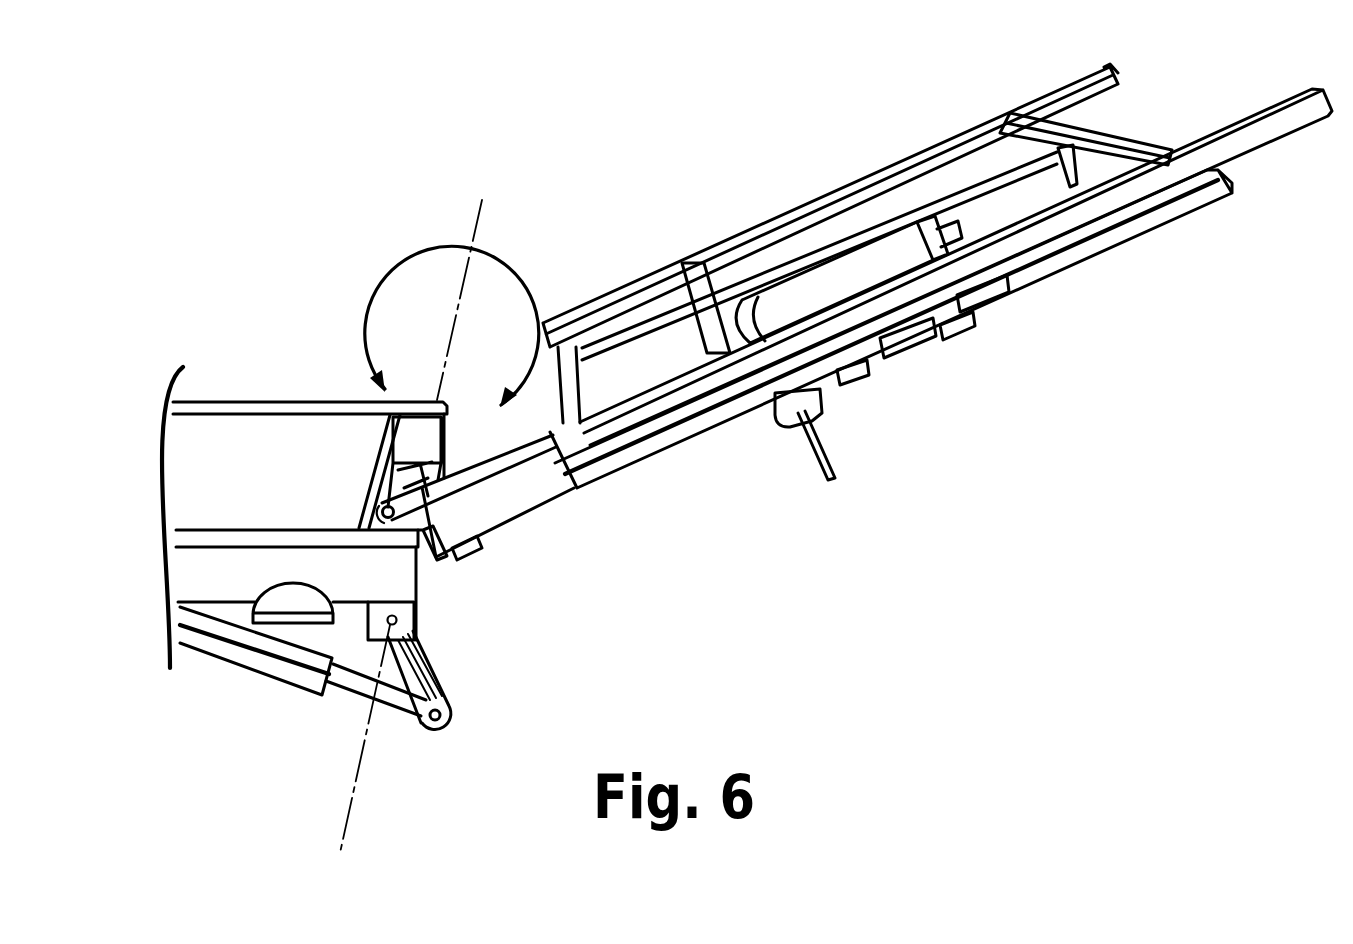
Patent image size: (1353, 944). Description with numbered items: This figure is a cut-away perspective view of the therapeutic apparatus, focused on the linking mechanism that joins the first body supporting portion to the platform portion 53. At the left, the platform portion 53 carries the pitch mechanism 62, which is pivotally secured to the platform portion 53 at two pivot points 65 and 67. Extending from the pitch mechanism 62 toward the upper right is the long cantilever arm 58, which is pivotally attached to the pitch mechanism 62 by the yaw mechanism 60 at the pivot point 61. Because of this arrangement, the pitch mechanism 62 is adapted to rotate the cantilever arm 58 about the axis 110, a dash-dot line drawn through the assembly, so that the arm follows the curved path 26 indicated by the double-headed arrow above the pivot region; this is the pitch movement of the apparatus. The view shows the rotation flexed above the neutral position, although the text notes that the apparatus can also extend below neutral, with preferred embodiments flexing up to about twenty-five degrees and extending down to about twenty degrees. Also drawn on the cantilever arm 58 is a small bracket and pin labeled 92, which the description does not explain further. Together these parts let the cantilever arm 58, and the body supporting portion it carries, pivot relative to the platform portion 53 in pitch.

The path 26 is at (408, 264).
The platform portion 53 is at (231, 436).
The cantilever arm 58 is at (533, 488).
The yaw mechanism 60 is at (463, 547).
The pivot point 61 is at (383, 506).
The pitch mechanism 62 is at (425, 534).
The pivot point 65 is at (398, 621).
The pivot point 67 is at (427, 470).
The locking pin 92 is at (798, 478).
The axis 110 is at (352, 802).